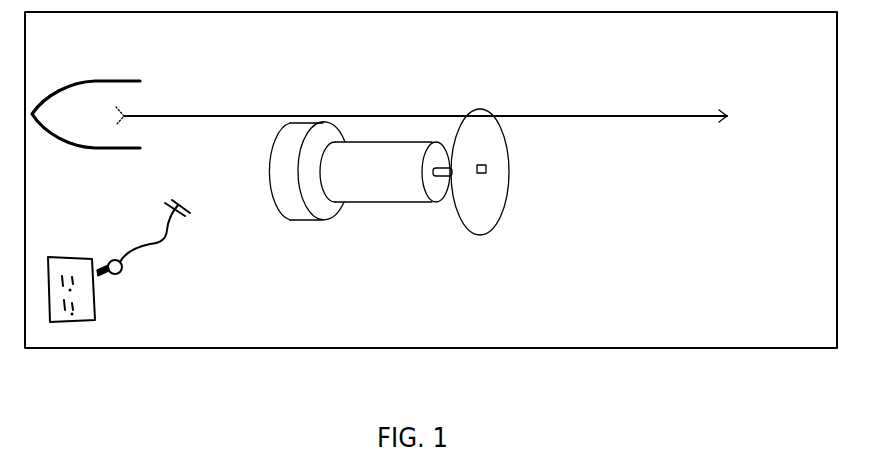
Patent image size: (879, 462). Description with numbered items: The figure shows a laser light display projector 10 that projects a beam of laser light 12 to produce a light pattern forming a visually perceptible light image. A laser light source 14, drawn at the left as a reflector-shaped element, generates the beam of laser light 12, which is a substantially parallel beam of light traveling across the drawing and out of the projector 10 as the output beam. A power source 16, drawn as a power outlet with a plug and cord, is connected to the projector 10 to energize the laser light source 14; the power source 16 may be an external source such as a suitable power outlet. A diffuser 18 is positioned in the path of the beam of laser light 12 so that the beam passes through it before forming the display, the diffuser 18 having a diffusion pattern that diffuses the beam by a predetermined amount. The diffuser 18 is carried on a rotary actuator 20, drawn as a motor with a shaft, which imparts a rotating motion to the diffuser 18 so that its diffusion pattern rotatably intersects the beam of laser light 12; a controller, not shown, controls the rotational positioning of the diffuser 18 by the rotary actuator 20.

The laser light display projector 10 is at (657, 270).
The beam of laser light 12 is at (247, 116).
The laser light source 14 is at (95, 80).
The power source 16 is at (135, 291).
The diffuser 18 is at (478, 103).
The rotary actuator 20 is at (361, 186).